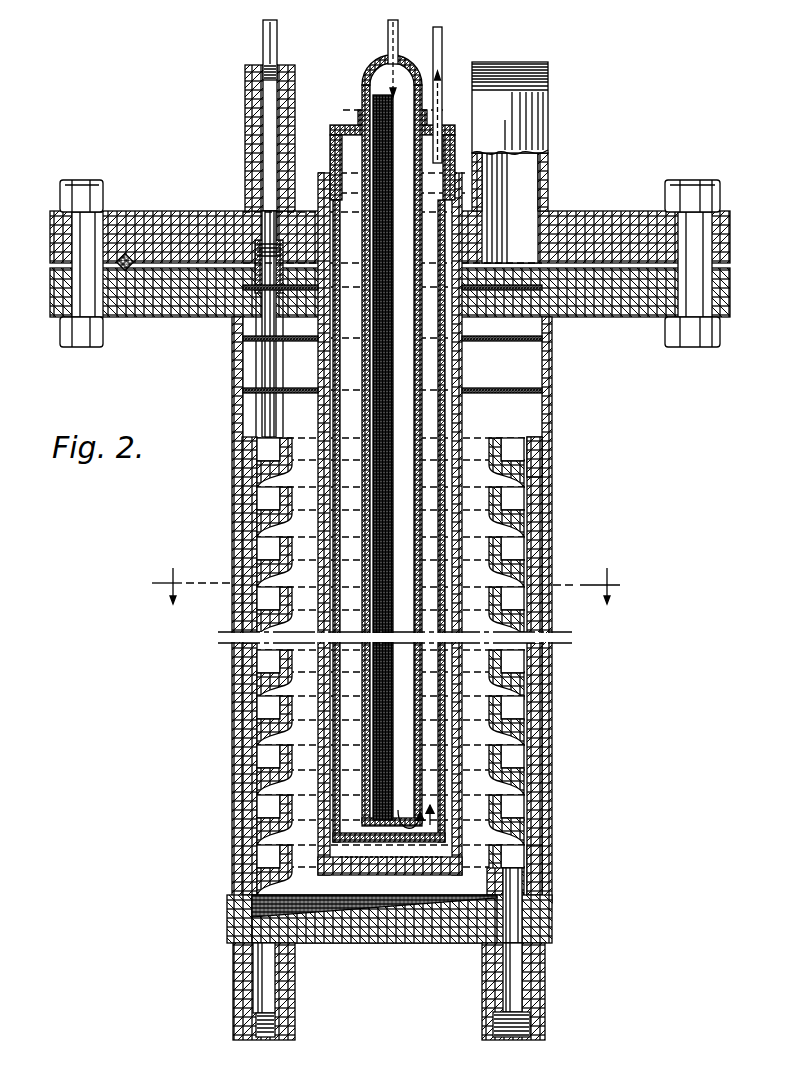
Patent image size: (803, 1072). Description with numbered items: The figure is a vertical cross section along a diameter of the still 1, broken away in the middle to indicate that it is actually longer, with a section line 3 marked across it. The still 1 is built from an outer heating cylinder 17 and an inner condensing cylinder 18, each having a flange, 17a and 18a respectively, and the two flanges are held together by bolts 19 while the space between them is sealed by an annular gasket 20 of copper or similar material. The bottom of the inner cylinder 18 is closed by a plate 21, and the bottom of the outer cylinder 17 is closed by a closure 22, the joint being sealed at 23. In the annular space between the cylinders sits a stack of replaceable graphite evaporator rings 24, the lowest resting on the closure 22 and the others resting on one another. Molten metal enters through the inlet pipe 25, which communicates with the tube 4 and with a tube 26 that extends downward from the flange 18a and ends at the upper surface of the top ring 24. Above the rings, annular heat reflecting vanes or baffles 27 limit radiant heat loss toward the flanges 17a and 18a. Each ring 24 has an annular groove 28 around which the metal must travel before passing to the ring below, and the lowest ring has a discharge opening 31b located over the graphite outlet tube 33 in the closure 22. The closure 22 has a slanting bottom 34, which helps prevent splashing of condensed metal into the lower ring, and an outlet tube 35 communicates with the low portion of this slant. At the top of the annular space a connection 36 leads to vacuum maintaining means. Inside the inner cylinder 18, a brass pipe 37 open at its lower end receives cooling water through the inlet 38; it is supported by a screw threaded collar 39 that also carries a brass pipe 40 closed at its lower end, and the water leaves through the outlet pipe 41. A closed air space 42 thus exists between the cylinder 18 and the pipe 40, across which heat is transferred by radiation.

The still 1 is at (226, 688).
The section line 3- 3 is at (388, 584).
The tube 4 is at (264, 30).
The outer heating cylinder 17 is at (553, 505).
The flange of outer heating cylinder 17a is at (619, 305).
The inner condensing cylinder 18 is at (462, 412).
The flange of inner condensing cylinder 18a is at (607, 222).
The bolts 19 is at (80, 241).
The annular gasket 20 is at (129, 257).
The plate 21 is at (396, 863).
The closure 22 is at (428, 930).
The seal 23 is at (552, 904).
The evaporator rings 24 is at (243, 547).
The inlet pipe 25 is at (247, 116).
The tube 26 is at (243, 378).
The annular heat reflecting vanes or baffles 27 is at (490, 338).
The annular groove 28 is at (514, 444).
The discharge opening 31b is at (542, 881).
The graphite outlet tube 33 is at (516, 986).
The slanting bottom 34 is at (348, 906).
The outlet tube 35 is at (264, 979).
The connection 36 is at (528, 112).
The brass pipe 37 is at (421, 558).
The inlet 38 is at (387, 31).
The screw threaded collar 39 is at (333, 128).
The brass pipe 40 is at (361, 705).
The outlet pipe 41 is at (441, 33).
The closed air space 42 is at (331, 412).